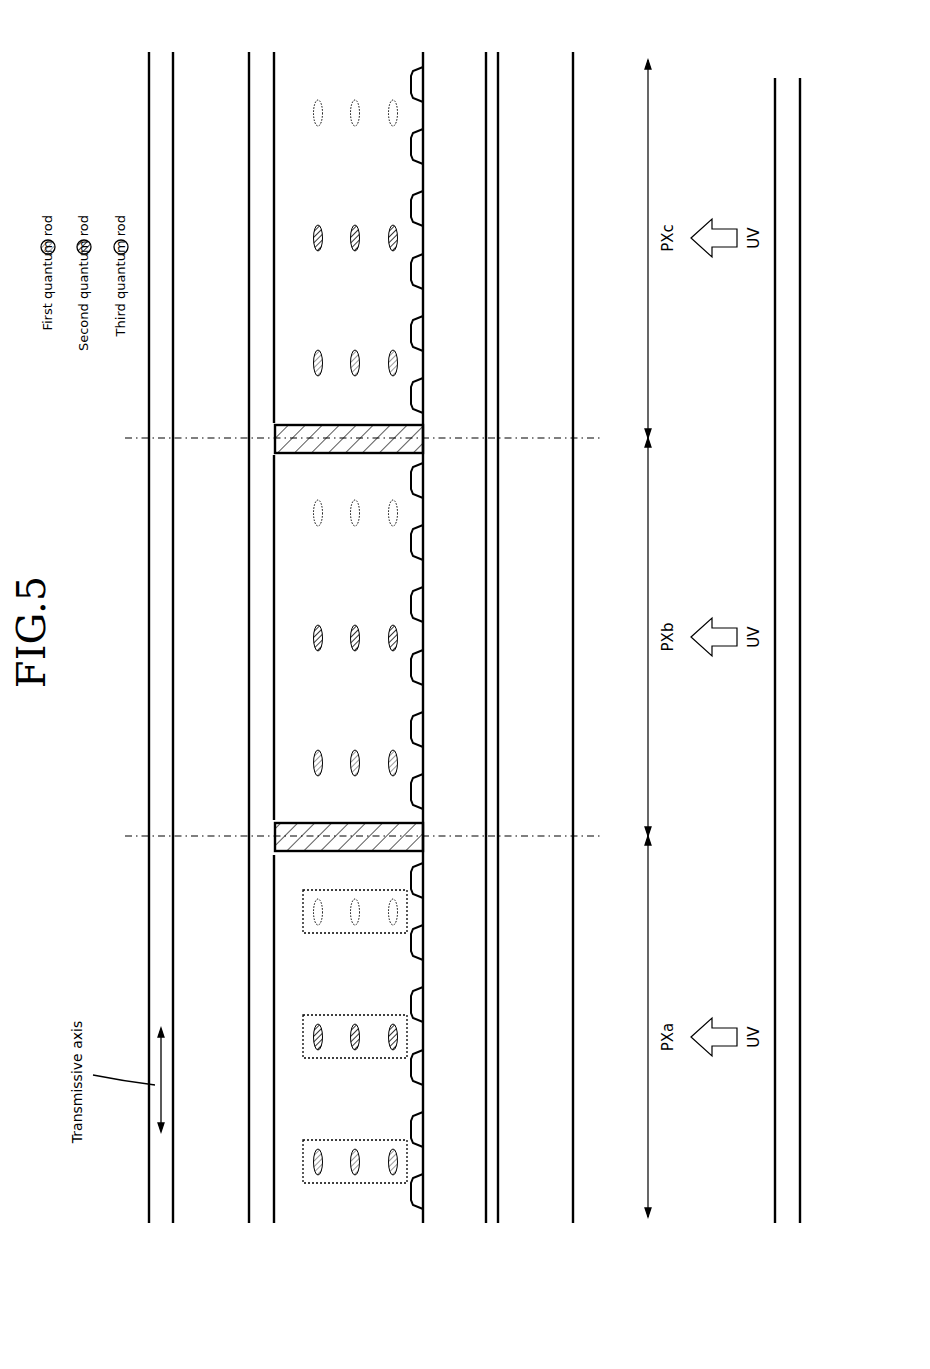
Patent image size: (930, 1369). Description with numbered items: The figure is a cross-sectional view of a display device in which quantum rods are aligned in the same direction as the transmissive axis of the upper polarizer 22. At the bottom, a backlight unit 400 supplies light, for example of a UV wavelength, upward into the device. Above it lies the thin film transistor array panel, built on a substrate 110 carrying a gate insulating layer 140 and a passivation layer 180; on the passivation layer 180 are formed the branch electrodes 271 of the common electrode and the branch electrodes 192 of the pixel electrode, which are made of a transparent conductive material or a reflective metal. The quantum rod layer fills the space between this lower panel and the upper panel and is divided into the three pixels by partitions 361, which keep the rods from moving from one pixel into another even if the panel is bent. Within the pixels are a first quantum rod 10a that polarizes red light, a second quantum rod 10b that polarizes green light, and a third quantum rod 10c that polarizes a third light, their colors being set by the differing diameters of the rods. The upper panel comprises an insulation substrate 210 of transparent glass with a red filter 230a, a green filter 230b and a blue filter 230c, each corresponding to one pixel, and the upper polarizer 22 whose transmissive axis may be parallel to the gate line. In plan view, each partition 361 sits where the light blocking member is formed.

The upper polarizer 22 is at (160, 1178).
The insulation substrate 210 is at (200, 558).
The red filter 230a is at (260, 968).
The green filter 230b is at (260, 685).
The blue filter 230c is at (260, 318).
The partition 361 is at (305, 425).
The first quantum rod 10a is at (318, 1183).
The second quantum rod 10b is at (318, 1058).
The third quantum rod 10c is at (318, 933).
The branch electrode of common electrode 271 is at (412, 877).
The branch electrode of pixel electrode 192 is at (425, 946).
The passivation layer 180 is at (455, 333).
The gate insulating layer 140 is at (490, 230).
The substrate 110 is at (548, 146).
The backlight unit 400 is at (790, 79).